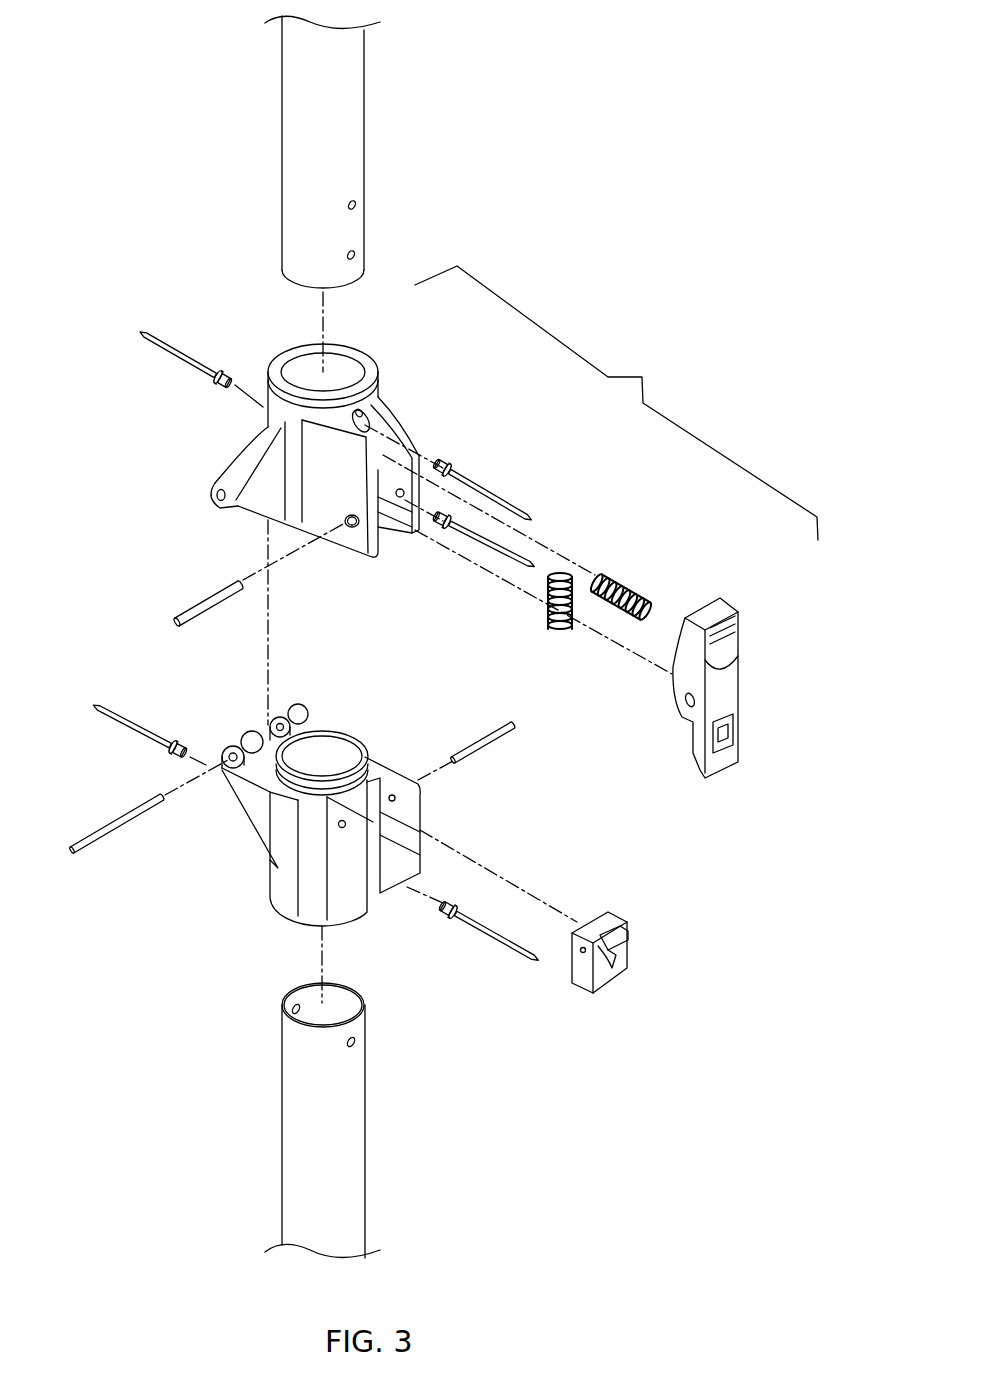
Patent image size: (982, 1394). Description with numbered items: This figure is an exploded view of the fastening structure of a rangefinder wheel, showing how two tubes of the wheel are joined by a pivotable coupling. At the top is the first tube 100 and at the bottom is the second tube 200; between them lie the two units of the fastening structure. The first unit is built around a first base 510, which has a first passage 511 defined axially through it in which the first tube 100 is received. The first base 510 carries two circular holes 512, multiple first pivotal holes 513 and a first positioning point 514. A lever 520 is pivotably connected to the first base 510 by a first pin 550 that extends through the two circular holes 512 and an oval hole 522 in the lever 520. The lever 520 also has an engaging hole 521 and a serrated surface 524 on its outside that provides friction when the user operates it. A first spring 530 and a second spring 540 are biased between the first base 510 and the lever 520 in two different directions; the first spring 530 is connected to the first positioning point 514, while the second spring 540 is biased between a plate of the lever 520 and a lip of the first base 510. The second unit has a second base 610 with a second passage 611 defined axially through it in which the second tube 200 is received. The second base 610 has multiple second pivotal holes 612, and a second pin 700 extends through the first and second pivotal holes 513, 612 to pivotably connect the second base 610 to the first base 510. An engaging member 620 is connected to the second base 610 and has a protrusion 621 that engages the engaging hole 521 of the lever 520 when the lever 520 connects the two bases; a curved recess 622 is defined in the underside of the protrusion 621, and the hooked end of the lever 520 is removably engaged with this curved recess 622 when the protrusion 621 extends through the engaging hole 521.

The first tube 100 is at (355, 118).
The second tube 200 is at (355, 1107).
The first base 510 is at (328, 473).
The first passage 511 is at (347, 362).
The circular holes 512 is at (405, 500).
The first pivotal holes 513 is at (213, 493).
The first positioning point 514 is at (373, 447).
The lever 520 is at (735, 673).
The engaging hole 521 is at (735, 733).
The oval hole 522 is at (688, 708).
The serrated surface 524 is at (740, 630).
The first spring 530 is at (620, 580).
The second spring 540 is at (560, 636).
The first pin 550 is at (210, 612).
The second base 610 is at (313, 797).
The second passage 611 is at (340, 733).
The second pivotal holes 612 is at (232, 770).
The engaging member 620 is at (654, 954).
The protrusion 621 is at (632, 935).
The curved recess 622 is at (608, 965).
The second pin 700 is at (86, 853).